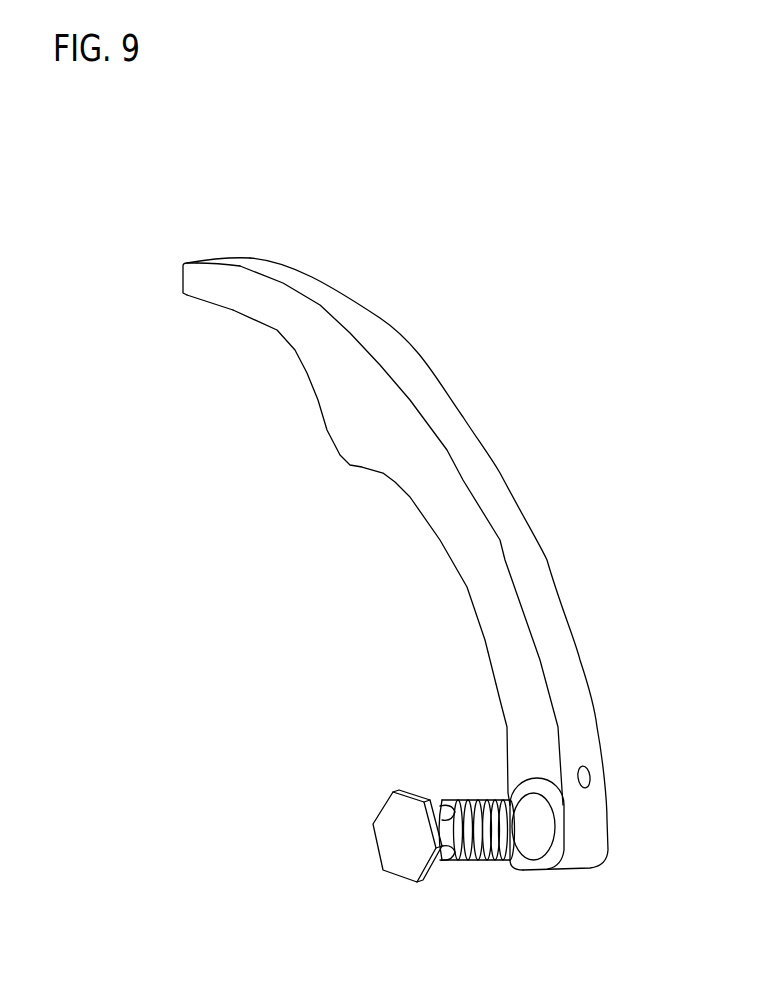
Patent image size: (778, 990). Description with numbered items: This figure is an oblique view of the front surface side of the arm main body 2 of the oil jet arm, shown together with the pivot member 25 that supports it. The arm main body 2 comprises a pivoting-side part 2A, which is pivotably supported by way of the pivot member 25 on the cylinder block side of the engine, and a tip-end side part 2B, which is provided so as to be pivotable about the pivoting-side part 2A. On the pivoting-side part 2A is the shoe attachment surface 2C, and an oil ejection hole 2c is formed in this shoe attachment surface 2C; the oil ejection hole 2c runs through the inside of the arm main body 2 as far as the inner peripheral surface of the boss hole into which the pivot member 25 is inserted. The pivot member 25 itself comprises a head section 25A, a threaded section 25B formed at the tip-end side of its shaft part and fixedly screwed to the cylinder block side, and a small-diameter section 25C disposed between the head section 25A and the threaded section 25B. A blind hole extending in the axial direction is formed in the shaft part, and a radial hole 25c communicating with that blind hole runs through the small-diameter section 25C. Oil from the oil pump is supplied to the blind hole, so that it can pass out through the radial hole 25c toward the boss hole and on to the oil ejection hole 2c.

The arm main body 2 is at (413, 564).
The pivoting-side part 2A is at (508, 698).
The tip-end side part 2B is at (210, 293).
The shoe attachment surface 2C is at (567, 640).
The oil ejection hole 2c is at (588, 767).
The pivot member 25 is at (421, 837).
The head section 25A is at (378, 837).
The threaded section 25B is at (485, 860).
The small-diameter section 25C is at (453, 862).
The radial hole 25c is at (443, 810).